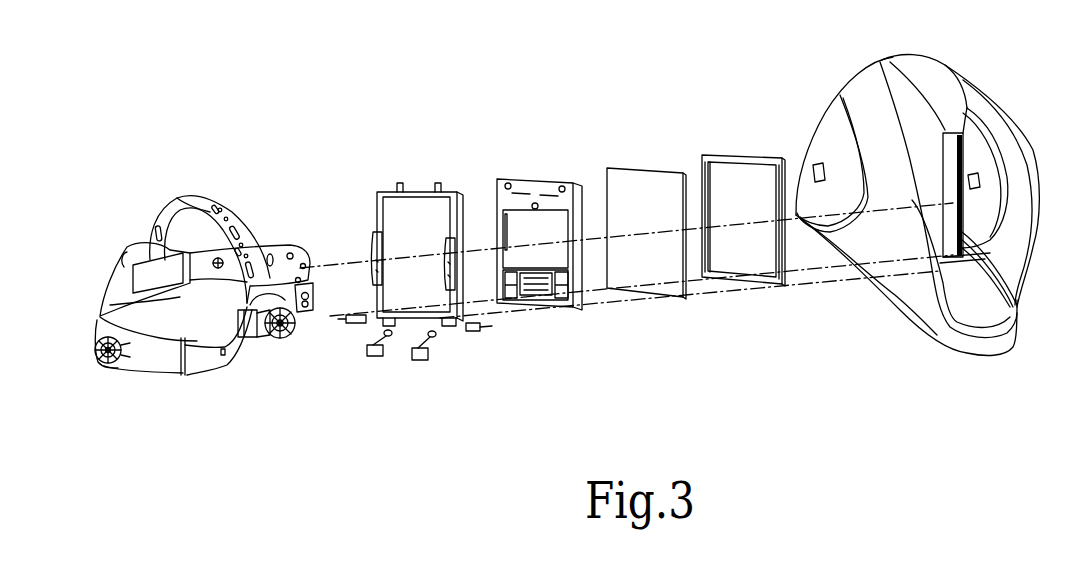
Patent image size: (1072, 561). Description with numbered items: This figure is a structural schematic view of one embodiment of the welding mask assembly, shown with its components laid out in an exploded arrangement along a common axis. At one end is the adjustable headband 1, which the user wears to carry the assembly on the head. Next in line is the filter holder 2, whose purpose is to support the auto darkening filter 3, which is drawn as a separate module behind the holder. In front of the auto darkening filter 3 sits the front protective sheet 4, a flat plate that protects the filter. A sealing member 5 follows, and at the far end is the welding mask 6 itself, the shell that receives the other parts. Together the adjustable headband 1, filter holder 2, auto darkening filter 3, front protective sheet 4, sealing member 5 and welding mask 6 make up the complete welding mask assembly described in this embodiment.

The adjustable headband 1 is at (202, 193).
The filter holder 2 is at (388, 182).
The auto darkening filter 3 is at (540, 178).
The front protective sheet 4 is at (648, 162).
The sealing member 5 is at (741, 150).
The welding mask 6 is at (880, 57).